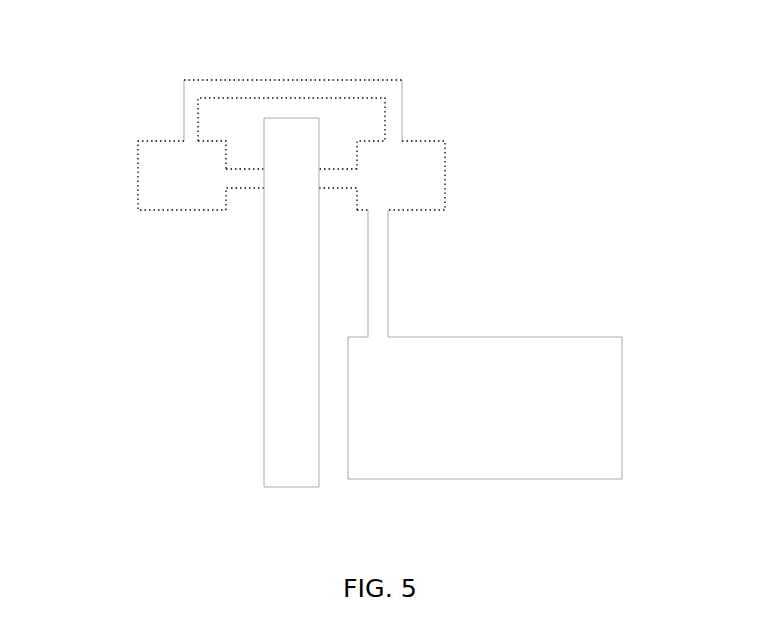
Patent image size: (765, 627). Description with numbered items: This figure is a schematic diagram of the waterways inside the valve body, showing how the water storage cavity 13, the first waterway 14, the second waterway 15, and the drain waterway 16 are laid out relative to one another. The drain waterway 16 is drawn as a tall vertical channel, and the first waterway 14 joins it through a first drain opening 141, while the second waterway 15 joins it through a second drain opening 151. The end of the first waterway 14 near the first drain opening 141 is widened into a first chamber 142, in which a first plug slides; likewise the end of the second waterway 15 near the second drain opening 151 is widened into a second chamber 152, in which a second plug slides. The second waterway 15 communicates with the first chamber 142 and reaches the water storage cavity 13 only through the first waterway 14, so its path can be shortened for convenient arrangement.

The water storage cavity 13 is at (582, 392).
The first waterway 14 is at (375, 266).
The second waterway 15 is at (282, 90).
The drain waterway 16 is at (275, 328).
The first drain opening 141 is at (333, 178).
The first chamber 142 is at (430, 192).
The second drain opening 151 is at (244, 180).
The second chamber 152 is at (144, 183).